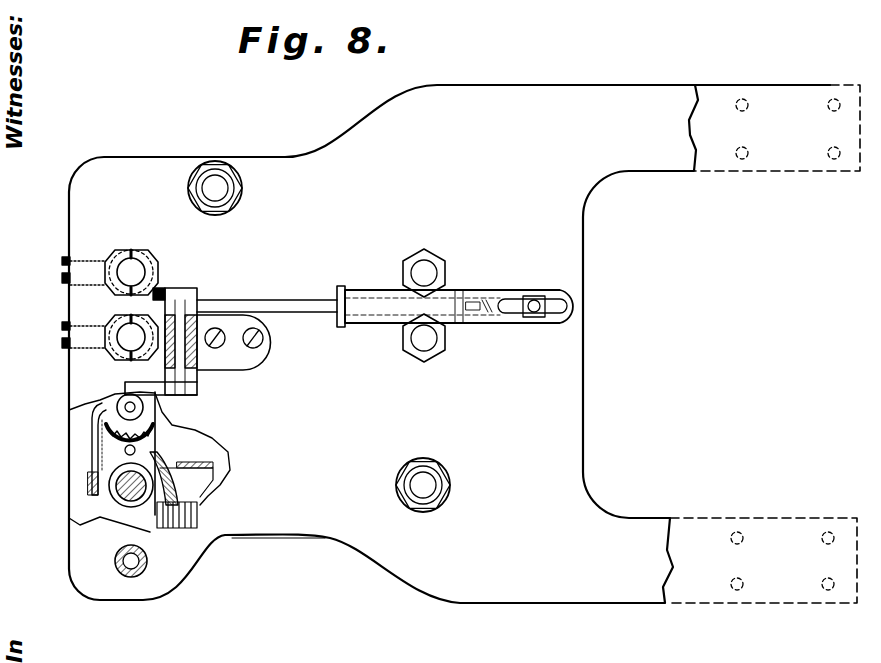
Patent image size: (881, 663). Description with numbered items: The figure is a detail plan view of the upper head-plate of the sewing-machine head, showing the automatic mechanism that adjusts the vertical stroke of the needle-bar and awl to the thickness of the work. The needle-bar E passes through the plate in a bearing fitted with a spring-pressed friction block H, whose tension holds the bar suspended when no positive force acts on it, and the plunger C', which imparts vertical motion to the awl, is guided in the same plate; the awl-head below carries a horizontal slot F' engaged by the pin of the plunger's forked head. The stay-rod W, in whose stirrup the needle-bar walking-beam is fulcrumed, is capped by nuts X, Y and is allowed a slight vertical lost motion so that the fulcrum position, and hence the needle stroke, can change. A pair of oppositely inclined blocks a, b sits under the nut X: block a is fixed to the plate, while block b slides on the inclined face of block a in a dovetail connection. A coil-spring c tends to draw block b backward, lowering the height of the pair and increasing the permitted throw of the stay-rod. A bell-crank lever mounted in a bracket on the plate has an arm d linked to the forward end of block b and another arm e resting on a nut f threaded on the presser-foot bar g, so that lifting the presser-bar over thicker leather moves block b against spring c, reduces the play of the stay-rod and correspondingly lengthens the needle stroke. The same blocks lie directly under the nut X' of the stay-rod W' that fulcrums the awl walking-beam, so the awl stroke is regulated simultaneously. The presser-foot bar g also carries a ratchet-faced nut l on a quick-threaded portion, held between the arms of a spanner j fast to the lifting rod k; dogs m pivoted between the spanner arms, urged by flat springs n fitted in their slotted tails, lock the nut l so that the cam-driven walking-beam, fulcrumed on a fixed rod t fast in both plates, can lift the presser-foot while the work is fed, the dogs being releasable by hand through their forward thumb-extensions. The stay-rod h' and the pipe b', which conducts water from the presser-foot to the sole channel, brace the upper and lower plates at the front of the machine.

The horizontal slot F' is at (461, 344).
The stay-rod h' is at (234, 188).
The fixed rod t is at (423, 485).
The spring pressed friction block H is at (150, 268).
The needle-bar E is at (131, 272).
The nut Y is at (125, 330).
The plunger C' is at (104, 359).
The bell-crank arm d is at (180, 292).
The bell-crank arm e is at (150, 392).
The nut f is at (118, 400).
The adjustable inclined block b is at (455, 321).
The coil-spring c is at (482, 302).
The fixed inclined block a is at (482, 318).
The stay-rod W is at (436, 263).
The stay-rod W' is at (420, 353).
The nut X is at (461, 276).
The nut X' is at (463, 345).
The ratchet faced nut l is at (149, 462).
The presser-foot bar g is at (143, 406).
The dogs m is at (100, 410).
The spanner j is at (125, 451).
The lifting rod k is at (120, 486).
The flat springs n is at (160, 518).
The pipe b' is at (148, 559).